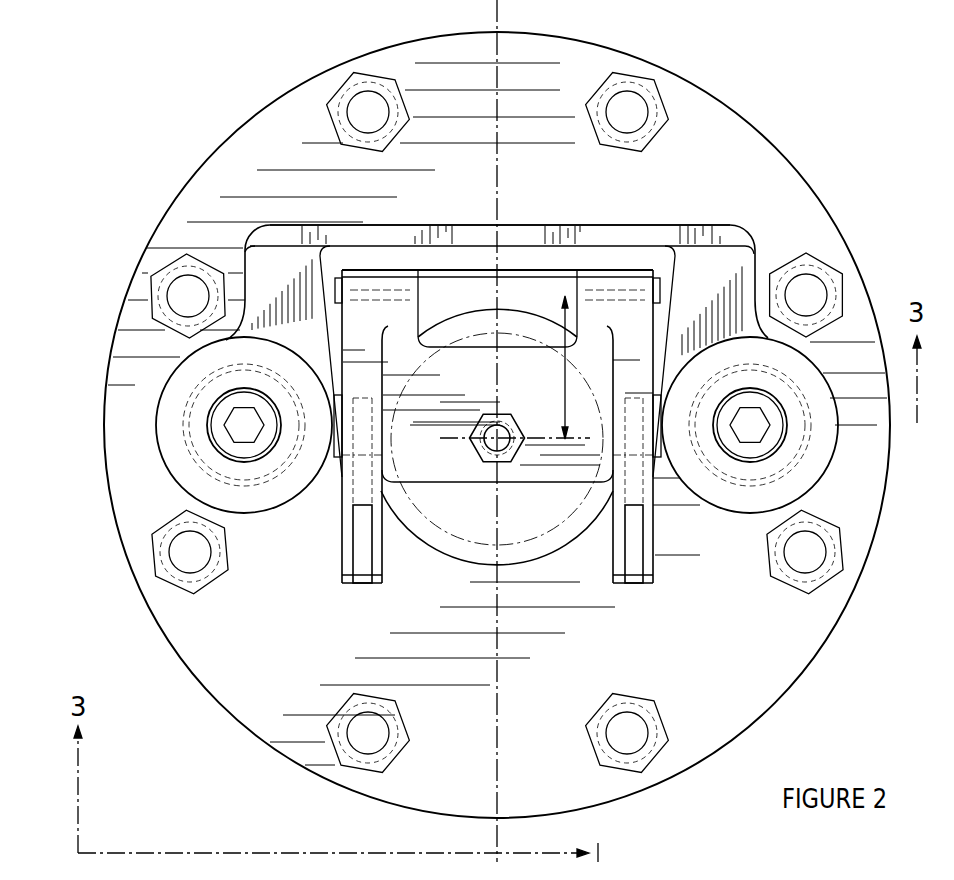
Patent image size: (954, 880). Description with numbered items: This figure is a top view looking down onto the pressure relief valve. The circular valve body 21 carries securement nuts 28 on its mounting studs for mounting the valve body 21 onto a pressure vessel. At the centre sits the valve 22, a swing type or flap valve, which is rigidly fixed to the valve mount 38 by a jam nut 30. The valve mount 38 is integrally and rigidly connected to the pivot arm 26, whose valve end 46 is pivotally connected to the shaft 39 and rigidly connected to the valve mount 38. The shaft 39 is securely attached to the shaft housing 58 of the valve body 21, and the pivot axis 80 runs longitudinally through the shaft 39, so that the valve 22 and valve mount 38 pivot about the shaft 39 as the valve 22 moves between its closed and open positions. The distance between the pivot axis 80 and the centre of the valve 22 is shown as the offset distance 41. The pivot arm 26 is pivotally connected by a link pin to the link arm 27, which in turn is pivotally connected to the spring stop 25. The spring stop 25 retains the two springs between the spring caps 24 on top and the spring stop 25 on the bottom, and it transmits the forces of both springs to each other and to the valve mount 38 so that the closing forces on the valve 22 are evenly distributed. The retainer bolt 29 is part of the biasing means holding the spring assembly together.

The valve body 21 is at (148, 251).
The securement nuts 28 is at (133, 283).
The retainer bolt 29 is at (170, 357).
The spring caps 24 is at (162, 383).
The pivot axis 80 is at (672, 297).
The shaft housing 58 is at (548, 285).
The shaft 39 is at (661, 298).
The spring stop 25 is at (585, 244).
The valve end 46 is at (620, 290).
The valve 22 is at (457, 547).
The jam nut 30 is at (490, 458).
The valve mount 38 is at (457, 462).
The offset distance 41 is at (537, 367).
The pivot arm 26 is at (350, 567).
The link arm 27 is at (360, 563).